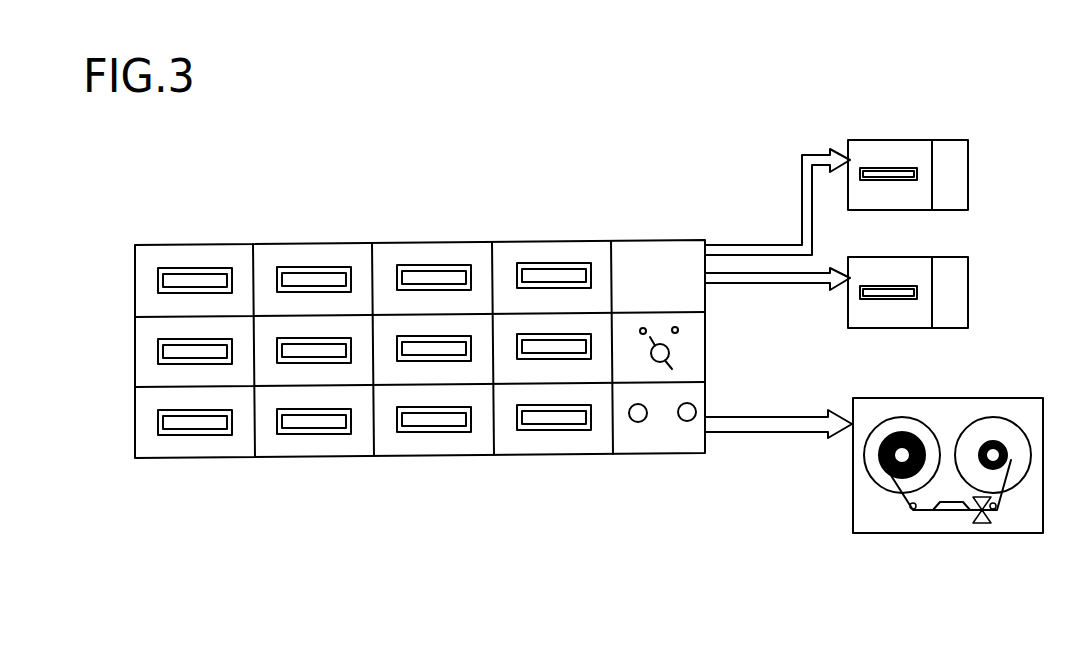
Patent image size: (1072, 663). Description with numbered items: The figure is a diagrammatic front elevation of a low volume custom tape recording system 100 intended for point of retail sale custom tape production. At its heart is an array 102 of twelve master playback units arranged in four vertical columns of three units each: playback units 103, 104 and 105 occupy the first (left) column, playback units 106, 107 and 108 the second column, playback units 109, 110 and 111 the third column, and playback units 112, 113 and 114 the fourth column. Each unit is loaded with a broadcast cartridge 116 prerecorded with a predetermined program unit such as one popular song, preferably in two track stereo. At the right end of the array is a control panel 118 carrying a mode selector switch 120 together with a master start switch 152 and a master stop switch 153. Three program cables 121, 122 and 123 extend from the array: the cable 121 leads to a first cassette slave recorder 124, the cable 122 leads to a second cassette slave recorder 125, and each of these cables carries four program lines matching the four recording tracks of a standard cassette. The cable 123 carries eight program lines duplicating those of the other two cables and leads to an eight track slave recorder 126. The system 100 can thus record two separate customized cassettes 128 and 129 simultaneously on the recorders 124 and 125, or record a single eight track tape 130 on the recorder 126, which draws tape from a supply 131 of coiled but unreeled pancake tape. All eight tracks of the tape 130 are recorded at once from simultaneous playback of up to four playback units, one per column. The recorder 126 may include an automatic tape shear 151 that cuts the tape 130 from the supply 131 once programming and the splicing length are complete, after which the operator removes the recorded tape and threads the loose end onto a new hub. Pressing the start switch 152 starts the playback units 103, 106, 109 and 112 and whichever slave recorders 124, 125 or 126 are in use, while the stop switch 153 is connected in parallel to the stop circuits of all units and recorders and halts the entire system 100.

The system 100 is at (448, 528).
The array 102 is at (199, 230).
The playback unit 103 is at (140, 288).
The playback unit 104 is at (140, 357).
The playback unit 105 is at (140, 426).
The playback unit 106 is at (294, 314).
The playback unit 107 is at (294, 384).
The playback unit 108 is at (294, 454).
The playback unit 109 is at (414, 312).
The playback unit 110 is at (414, 382).
The playback unit 111 is at (414, 452).
The playback unit 112 is at (534, 310).
The playback unit 113 is at (534, 380).
The playback unit 114 is at (534, 450).
The broadcast cartridge 116 is at (224, 280).
The control panel 118 is at (659, 252).
The mode selector switch 120 is at (675, 353).
The program cable 121 is at (768, 245).
The program cable 122 is at (795, 284).
The program cable 123 is at (788, 416).
The first cassette slave recorder 124 is at (969, 179).
The second cassette slave recorder 125 is at (969, 280).
The eight track slave recorder 126 is at (898, 530).
The customized cassette 128 is at (913, 176).
The customized cassette 129 is at (887, 292).
The eight track tape 130 is at (1002, 446).
The supply 131 is at (917, 432).
The automatic tape shear 151 is at (982, 523).
The master start switch 152 is at (643, 422).
The master stop switch 153 is at (690, 422).